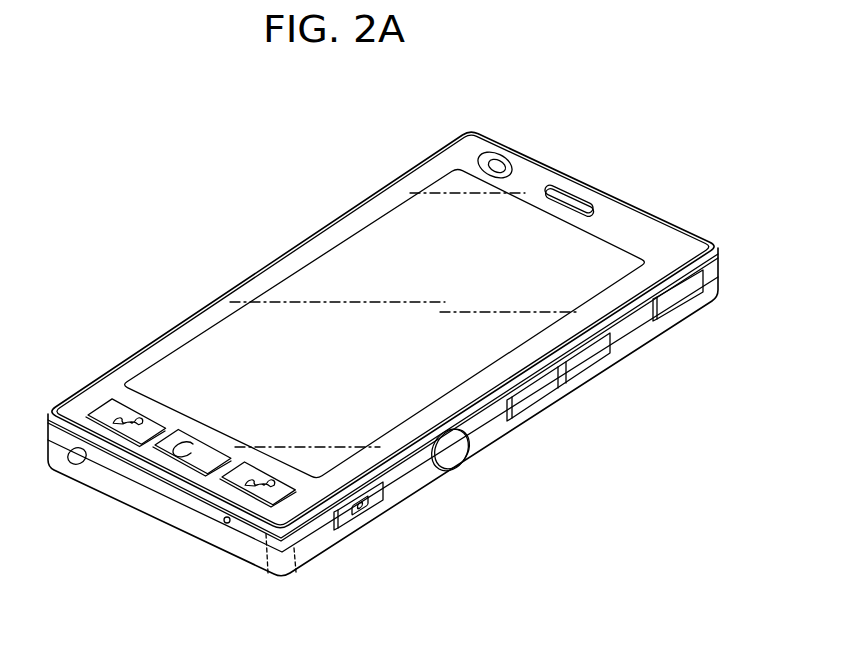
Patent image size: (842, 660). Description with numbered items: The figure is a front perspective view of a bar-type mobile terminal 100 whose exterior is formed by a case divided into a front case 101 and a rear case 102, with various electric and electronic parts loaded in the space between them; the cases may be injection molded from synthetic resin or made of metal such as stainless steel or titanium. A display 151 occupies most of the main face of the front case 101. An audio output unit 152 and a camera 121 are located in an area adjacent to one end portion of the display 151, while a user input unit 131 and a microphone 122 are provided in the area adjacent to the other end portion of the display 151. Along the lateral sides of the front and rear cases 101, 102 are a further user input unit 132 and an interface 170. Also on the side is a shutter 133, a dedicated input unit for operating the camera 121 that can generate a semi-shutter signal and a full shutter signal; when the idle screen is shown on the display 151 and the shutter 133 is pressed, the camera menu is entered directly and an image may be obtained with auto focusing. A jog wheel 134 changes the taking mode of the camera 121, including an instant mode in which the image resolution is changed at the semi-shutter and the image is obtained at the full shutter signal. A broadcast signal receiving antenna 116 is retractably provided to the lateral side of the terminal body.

The mobile terminal 100 is at (330, 176).
The front case 101 is at (713, 262).
The rear case 102 is at (718, 283).
The broadcast signal receiving antenna 116 is at (70, 462).
The camera 121 is at (497, 163).
The microphone 122 is at (226, 524).
The user input unit 131 is at (118, 420).
The user input unit 132 is at (545, 395).
The shutter 133 is at (383, 500).
The jog wheel 134 is at (453, 455).
The display 151 is at (322, 250).
The audio output unit 152 is at (572, 200).
The interface 170 is at (680, 300).